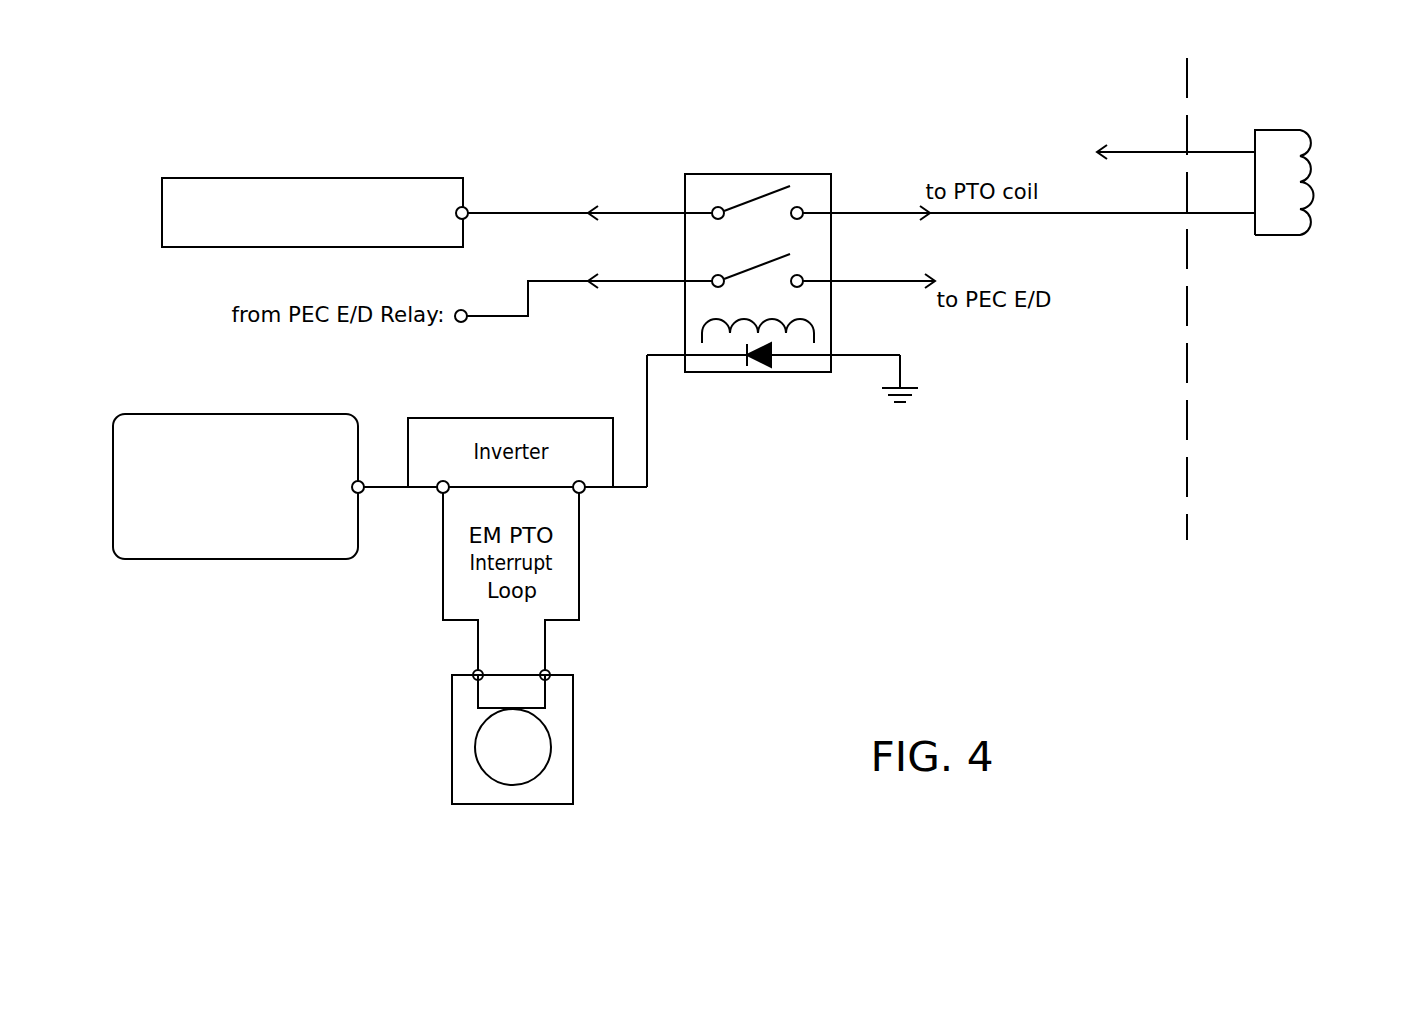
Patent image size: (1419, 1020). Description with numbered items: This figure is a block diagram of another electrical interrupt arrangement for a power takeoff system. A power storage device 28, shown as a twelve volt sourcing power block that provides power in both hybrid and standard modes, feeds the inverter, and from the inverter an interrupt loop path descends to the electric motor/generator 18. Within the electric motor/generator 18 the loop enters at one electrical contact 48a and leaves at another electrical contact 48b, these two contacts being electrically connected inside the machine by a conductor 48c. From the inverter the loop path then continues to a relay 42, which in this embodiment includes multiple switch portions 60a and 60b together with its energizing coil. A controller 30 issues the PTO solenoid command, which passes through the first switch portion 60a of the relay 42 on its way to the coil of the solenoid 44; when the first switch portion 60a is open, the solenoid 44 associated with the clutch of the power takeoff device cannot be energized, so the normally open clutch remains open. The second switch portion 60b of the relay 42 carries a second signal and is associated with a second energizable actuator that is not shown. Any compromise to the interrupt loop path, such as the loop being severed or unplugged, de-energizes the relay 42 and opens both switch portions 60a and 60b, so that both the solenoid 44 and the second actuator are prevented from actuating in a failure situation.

The controller 30 is at (312, 177).
The relay 42 is at (823, 192).
The switch portion 60a is at (737, 207).
The switch portion 60b is at (760, 266).
The solenoid 44 is at (1310, 130).
The power storage device 28 is at (277, 560).
The electrical contact 48a is at (474, 670).
The electrical contact 48b is at (550, 669).
The conductor 48c is at (547, 697).
The electric motor/generator 18 is at (552, 747).